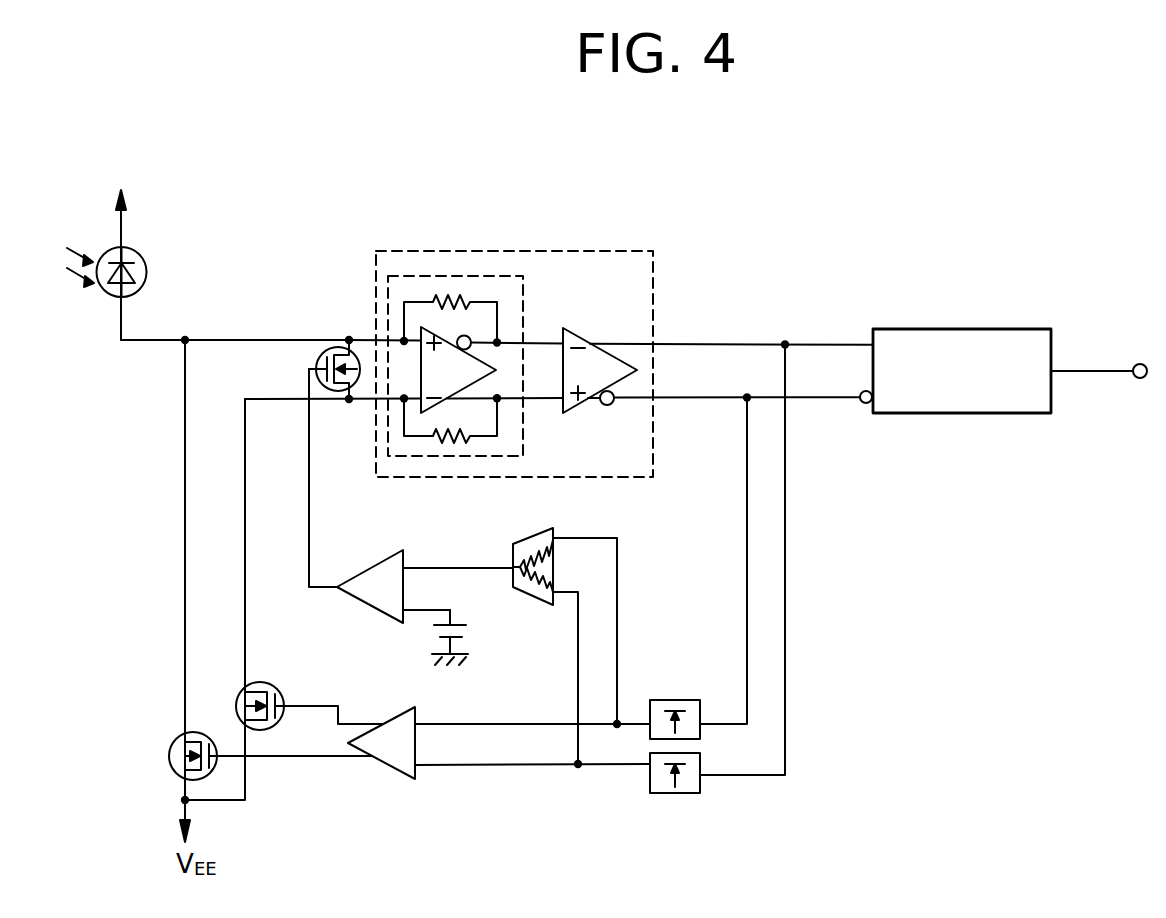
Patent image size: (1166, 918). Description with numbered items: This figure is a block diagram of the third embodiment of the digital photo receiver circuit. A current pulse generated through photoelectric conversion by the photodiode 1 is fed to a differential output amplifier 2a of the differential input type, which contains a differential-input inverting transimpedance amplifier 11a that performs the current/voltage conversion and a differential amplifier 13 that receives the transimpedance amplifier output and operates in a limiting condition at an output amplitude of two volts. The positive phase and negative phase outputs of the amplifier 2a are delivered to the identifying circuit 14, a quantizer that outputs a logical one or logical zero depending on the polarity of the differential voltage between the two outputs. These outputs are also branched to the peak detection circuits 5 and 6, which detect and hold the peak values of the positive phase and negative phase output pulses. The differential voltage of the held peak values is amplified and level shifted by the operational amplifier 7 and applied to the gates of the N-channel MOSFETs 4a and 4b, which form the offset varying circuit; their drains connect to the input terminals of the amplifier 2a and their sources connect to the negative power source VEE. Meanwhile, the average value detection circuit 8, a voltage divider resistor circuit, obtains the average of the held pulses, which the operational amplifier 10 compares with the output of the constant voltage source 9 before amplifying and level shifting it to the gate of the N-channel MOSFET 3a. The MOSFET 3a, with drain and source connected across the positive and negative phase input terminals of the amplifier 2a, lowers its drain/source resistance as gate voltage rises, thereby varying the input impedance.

The photodiode 1 is at (143, 254).
The differential output amplifier 2a is at (618, 250).
The N-channel MOSFET 3a is at (322, 348).
The N-channel MOSFET 4a is at (168, 748).
The N-channel MOSFET 4b is at (267, 683).
The peak detection circuit 5 is at (683, 793).
The peak detection circuit 6 is at (683, 700).
The operational amplifier 7 is at (389, 716).
The average value detection circuit 8 is at (538, 605).
The constant voltage source 9 is at (460, 621).
The operational amplifier 10 is at (372, 565).
The transimpedance amplifier 11a is at (523, 450).
The differential amplifier 13 is at (583, 330).
The identifying circuit 14 is at (1010, 328).